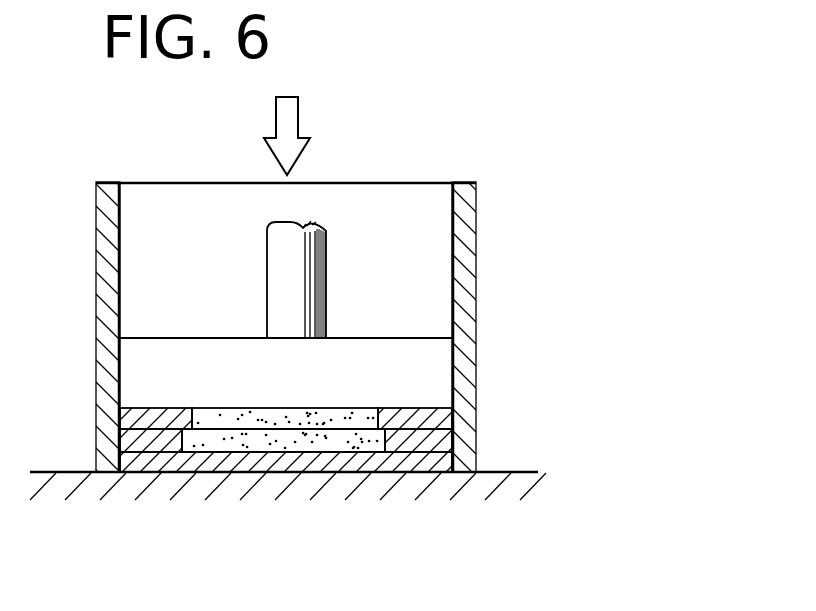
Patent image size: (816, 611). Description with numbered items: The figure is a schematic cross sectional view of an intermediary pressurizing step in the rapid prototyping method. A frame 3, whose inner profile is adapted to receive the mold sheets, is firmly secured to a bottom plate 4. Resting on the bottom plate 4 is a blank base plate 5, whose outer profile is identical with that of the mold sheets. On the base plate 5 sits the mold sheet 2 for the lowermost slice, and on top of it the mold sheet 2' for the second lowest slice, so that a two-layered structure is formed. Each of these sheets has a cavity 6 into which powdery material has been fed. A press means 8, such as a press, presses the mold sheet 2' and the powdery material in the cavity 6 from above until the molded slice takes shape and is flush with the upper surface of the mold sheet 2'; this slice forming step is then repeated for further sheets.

The mold sheet 2 is at (346, 443).
The mold sheet 2' is at (345, 402).
The frame 3 is at (462, 363).
The bottom plate 4 is at (188, 480).
The base plate 5 is at (375, 458).
The cavity 6 is at (280, 440).
The press means 8 is at (400, 355).